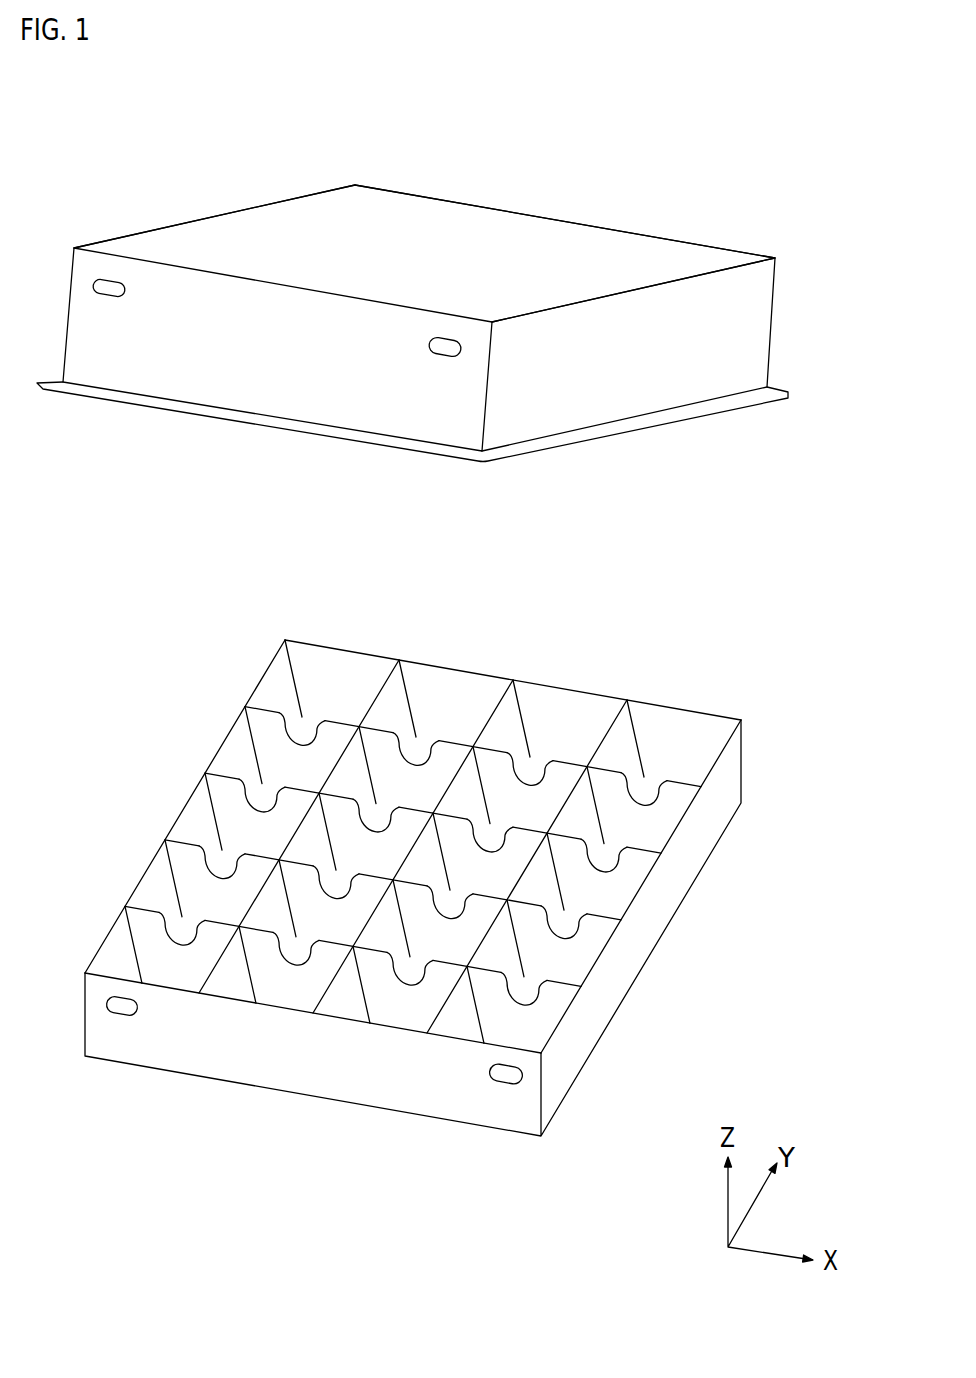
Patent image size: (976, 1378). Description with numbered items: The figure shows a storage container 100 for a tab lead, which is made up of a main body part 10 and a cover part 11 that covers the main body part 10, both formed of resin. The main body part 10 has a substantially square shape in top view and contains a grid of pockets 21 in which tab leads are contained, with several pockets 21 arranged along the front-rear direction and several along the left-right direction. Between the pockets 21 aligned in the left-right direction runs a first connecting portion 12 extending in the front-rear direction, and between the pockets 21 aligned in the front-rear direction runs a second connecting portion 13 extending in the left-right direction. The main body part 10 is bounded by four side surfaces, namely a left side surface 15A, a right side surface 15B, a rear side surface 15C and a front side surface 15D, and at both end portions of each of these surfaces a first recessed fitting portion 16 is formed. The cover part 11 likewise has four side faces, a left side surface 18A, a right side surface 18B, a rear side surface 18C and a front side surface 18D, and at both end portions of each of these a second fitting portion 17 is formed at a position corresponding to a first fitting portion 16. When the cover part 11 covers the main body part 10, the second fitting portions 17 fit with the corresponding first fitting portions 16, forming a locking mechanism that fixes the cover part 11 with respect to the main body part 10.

The storage container 100 is at (145, 128).
The cover part 11 is at (662, 206).
The second fitting portion 17 is at (100, 297).
The left side surface 18A is at (227, 238).
The right side surface 18B is at (627, 388).
The rear side surface 18C is at (305, 386).
The front side surface 18D is at (557, 247).
The main body part 10 is at (746, 870).
The first connecting portion 12 is at (218, 962).
The second connecting portion 13 is at (270, 853).
The left side surface 15A is at (232, 755).
The right side surface 15B is at (663, 907).
The rear side surface 15C is at (478, 1103).
The front side surface 15D is at (568, 717).
The first recessed fitting portion 16 is at (120, 1015).
The pocket 21 is at (195, 897).